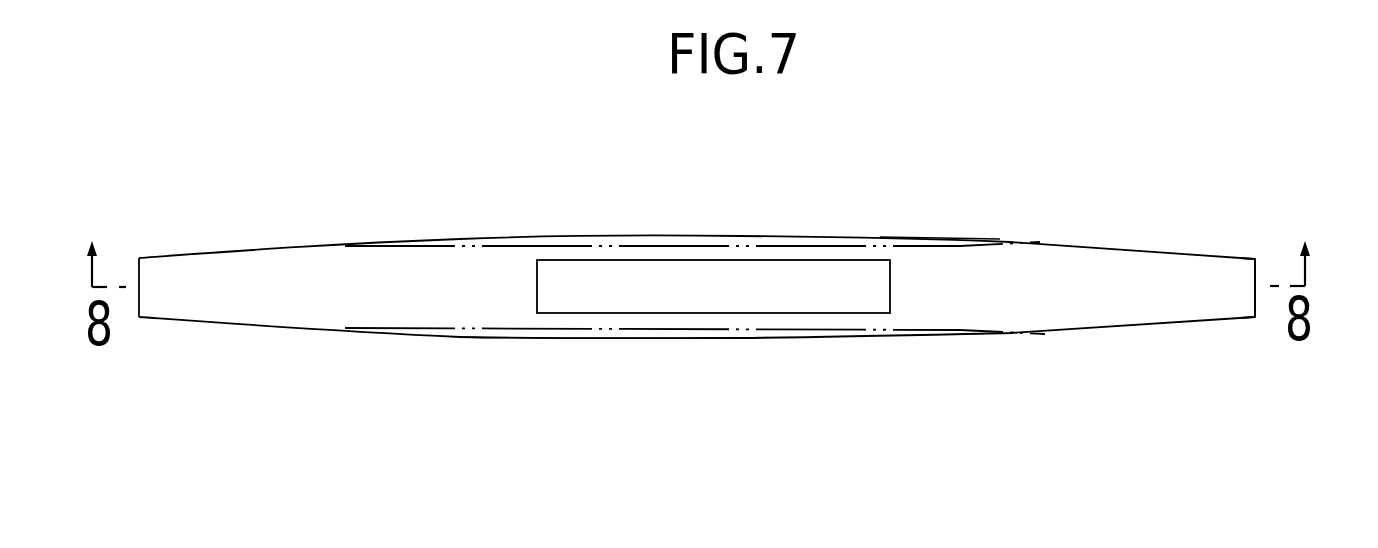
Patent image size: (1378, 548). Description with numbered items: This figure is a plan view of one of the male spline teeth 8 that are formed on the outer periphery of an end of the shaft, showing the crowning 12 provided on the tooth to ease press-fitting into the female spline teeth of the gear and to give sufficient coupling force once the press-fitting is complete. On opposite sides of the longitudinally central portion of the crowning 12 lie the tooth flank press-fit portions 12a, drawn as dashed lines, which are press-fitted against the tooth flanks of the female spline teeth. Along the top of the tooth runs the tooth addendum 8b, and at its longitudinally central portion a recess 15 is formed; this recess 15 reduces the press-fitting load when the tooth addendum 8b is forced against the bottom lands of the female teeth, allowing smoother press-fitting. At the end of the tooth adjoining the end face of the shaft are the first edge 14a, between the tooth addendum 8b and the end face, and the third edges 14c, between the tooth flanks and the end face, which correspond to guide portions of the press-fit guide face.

The male spline teeth 8 is at (1029, 228).
The tooth addendum 8b is at (948, 263).
The crowning 12 is at (608, 350).
The tooth flank press-fit portion 12a is at (731, 235).
The first edge 14a is at (1257, 275).
The third edge 14c is at (1256, 258).
The recess 15 is at (890, 288).